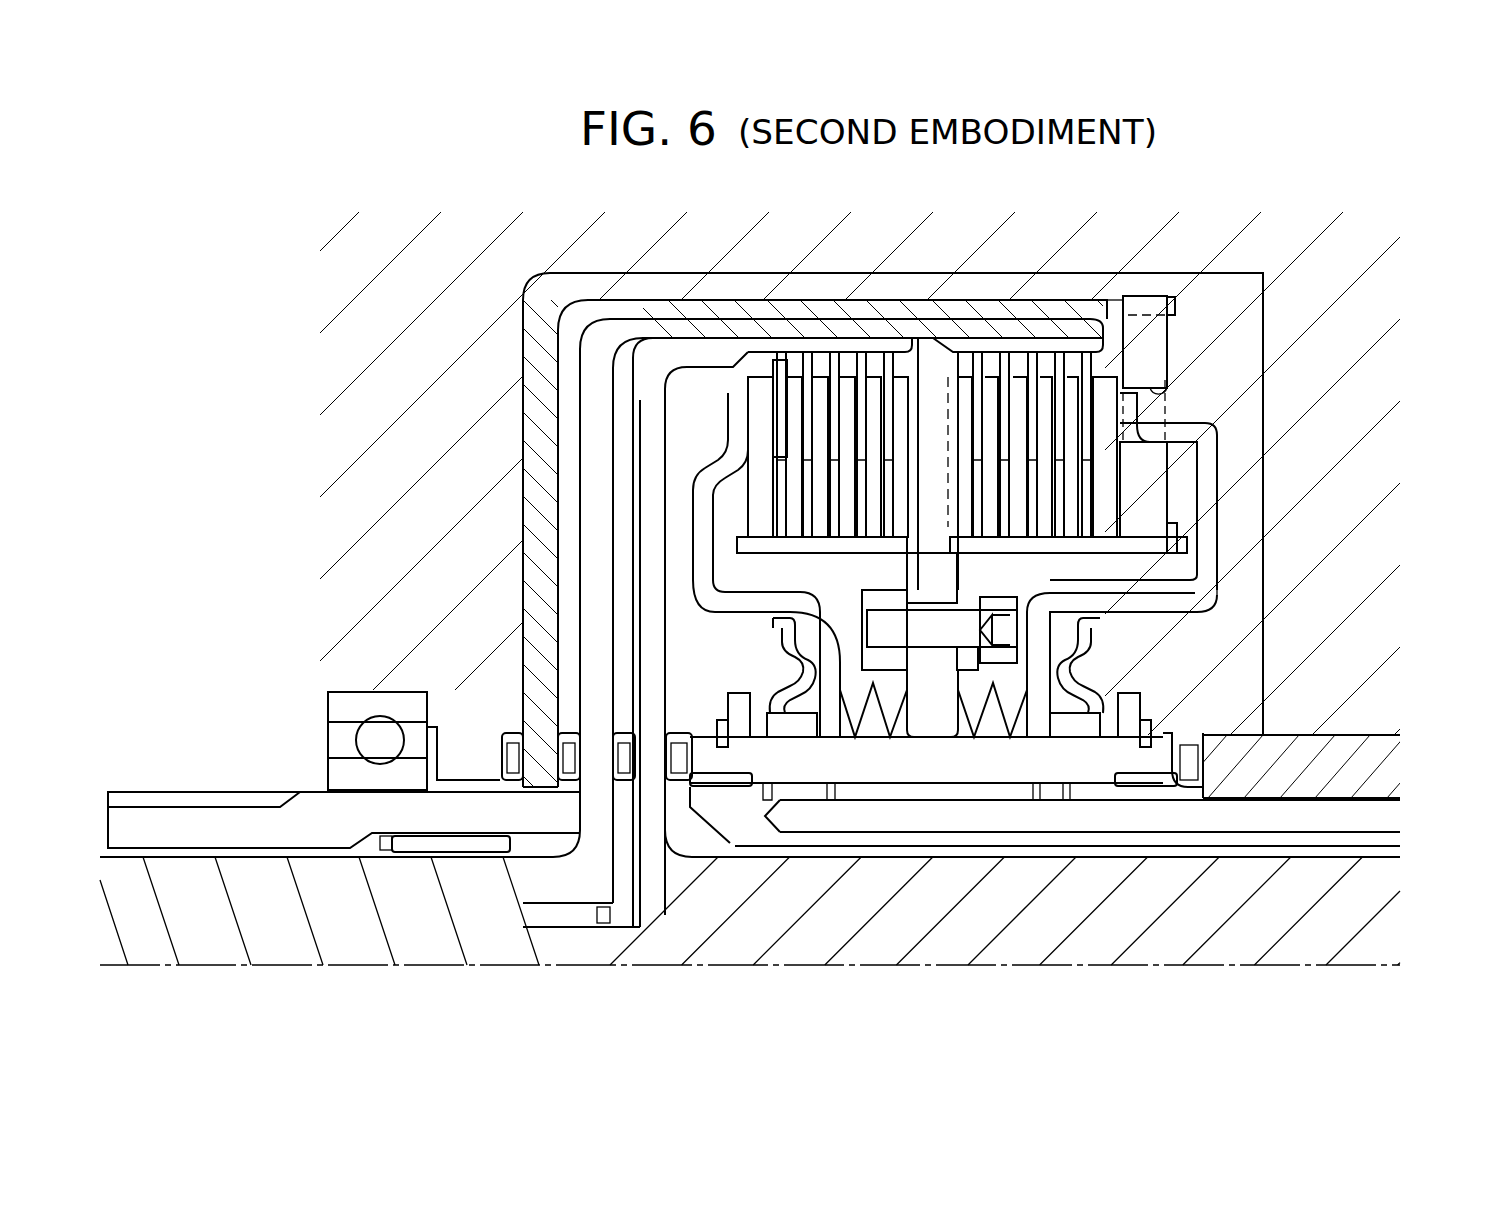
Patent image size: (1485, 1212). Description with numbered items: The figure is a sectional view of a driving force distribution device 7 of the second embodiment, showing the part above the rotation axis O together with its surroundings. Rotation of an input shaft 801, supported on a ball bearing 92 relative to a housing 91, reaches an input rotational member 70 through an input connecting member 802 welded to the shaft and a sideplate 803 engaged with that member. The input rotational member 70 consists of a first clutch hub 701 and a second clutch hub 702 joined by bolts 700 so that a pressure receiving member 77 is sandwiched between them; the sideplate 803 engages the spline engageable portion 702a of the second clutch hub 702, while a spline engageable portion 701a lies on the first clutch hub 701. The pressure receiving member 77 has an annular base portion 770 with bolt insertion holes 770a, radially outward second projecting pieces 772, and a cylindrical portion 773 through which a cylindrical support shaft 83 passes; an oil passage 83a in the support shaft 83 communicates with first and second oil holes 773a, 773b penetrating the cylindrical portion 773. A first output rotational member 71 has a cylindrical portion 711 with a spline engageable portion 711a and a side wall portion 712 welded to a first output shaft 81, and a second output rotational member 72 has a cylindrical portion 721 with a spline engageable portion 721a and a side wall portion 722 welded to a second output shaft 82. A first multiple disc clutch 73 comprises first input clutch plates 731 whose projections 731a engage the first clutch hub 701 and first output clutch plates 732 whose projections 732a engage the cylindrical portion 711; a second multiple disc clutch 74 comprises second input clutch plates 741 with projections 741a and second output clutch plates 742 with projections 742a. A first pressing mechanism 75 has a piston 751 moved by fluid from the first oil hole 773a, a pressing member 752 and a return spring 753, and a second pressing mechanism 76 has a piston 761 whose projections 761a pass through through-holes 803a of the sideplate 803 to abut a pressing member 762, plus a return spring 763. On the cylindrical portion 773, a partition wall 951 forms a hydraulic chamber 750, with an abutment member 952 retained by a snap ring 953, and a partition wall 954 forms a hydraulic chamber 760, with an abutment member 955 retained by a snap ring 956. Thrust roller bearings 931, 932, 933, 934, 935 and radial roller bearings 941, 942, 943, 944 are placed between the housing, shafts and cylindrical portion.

The driving force distribution device 7 is at (1190, 300).
The input rotational member 70 is at (1178, 600).
The bolts 700 is at (962, 648).
The first clutch hub 701 is at (745, 568).
The spline engageable portion 701a is at (725, 535).
The second clutch hub 702 is at (1216, 590).
The spline engageable portion 702a is at (1205, 547).
The first output rotational member 71 is at (688, 368).
The cylindrical portion 711 is at (768, 366).
The spline engageable portion 711a is at (822, 346).
The side wall portion 712 is at (722, 548).
The second output rotational member 72 is at (620, 350).
The cylindrical portion 721 is at (1052, 330).
The spline engageable portion 721a is at (962, 343).
The side wall portion 722 is at (622, 583).
The first multiple disc clutch 73 is at (768, 415).
The first input clutch plates 731 is at (700, 463).
The projections 731a is at (793, 545).
The first output clutch plates 732 is at (728, 368).
The projections 732a is at (760, 355).
The second multiple disc clutch 74 is at (1250, 288).
The second input clutch plates 741 is at (1098, 567).
The projections 741a is at (1088, 592).
The second output clutch plates 742 is at (1042, 350).
The projections 742a is at (980, 350).
The first pressing mechanism 75 is at (662, 363).
The hydraulic chamber 750 is at (815, 737).
The piston 751 is at (795, 507).
The pressing member 752 is at (760, 442).
The return spring 753 is at (860, 695).
The second pressing mechanism 76 is at (1226, 548).
The hydraulic chamber 760 is at (1075, 725).
The piston 761 is at (1210, 492).
The projections 761a is at (1200, 446).
The pressing member 762 is at (1105, 370).
The return spring 763 is at (1004, 695).
The pressure receiving member 77 is at (930, 372).
The base portion 770 is at (962, 707).
The bolt insertion holes 770a is at (910, 606).
The second projecting pieces 772 is at (848, 353).
The cylindrical portion 773 is at (962, 775).
The first oil hole 773a is at (803, 763).
The second oil hole 773b is at (1067, 764).
The input shaft 801 is at (222, 818).
The input connecting member 802 is at (567, 397).
The sideplate 803 is at (1175, 540).
The through-holes 803a is at (1177, 433).
The first output shaft 81 is at (1253, 953).
The second output shaft 82 is at (312, 945).
The support shaft 83 is at (1386, 748).
The oil passage 83a is at (1297, 818).
The housing 91 is at (1158, 246).
The ball bearing 92 is at (326, 746).
The thrust roller bearing 931 is at (510, 740).
The thrust roller bearing 932 is at (568, 740).
The thrust roller bearing 933 is at (624, 740).
The thrust roller bearing 934 is at (678, 738).
The thrust roller bearing 935 is at (1194, 762).
The radial roller bearing 941 is at (446, 852).
The radial roller bearing 942 is at (556, 918).
The radial roller bearing 943 is at (720, 780).
The radial roller bearing 944 is at (1157, 784).
The partition wall 951 is at (776, 697).
The abutment member 952 is at (742, 708).
The snap ring 953 is at (720, 728).
The partition wall 954 is at (1073, 690).
The abutment member 955 is at (1125, 703).
The snap ring 956 is at (1157, 712).
The rotation axis O is at (1386, 967).